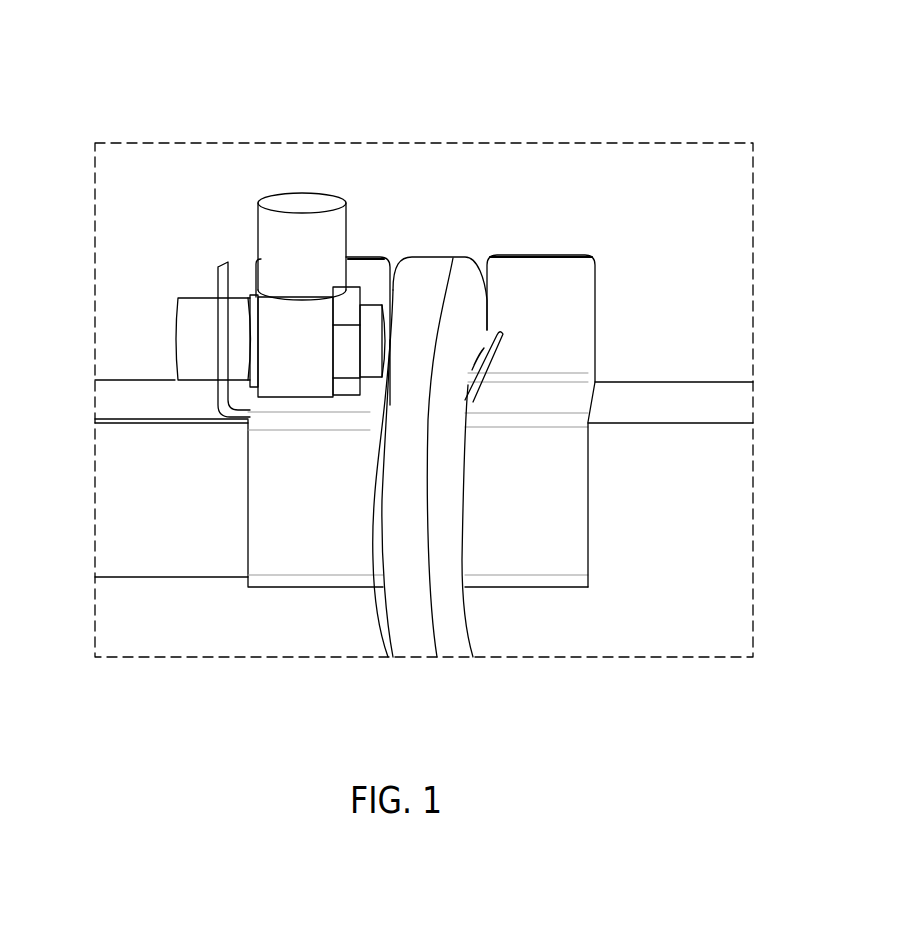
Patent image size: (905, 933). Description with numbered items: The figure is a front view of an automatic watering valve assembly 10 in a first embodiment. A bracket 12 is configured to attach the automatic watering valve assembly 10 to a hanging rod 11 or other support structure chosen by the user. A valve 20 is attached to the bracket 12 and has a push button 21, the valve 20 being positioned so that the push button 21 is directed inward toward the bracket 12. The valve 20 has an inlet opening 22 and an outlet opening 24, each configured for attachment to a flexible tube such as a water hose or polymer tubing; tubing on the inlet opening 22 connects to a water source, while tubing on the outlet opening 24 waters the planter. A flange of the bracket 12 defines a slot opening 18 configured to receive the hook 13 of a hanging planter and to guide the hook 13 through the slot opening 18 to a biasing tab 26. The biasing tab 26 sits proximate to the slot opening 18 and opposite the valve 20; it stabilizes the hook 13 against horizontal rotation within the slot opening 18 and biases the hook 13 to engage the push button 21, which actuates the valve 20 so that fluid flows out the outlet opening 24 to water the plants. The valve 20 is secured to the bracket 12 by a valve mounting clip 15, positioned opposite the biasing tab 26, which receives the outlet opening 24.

The automatic watering valve assembly 10 is at (168, 44).
The hanging rod 11 is at (147, 495).
The bracket 12 is at (562, 405).
The hook 13 is at (460, 323).
The valve mounting clip 15 is at (217, 283).
The slot opening 18 is at (430, 257).
The valve 20 is at (297, 368).
The push button 21 is at (370, 365).
The inlet opening 22 is at (285, 200).
The outlet opening 24 is at (187, 343).
The biasing tab 26 is at (472, 365).